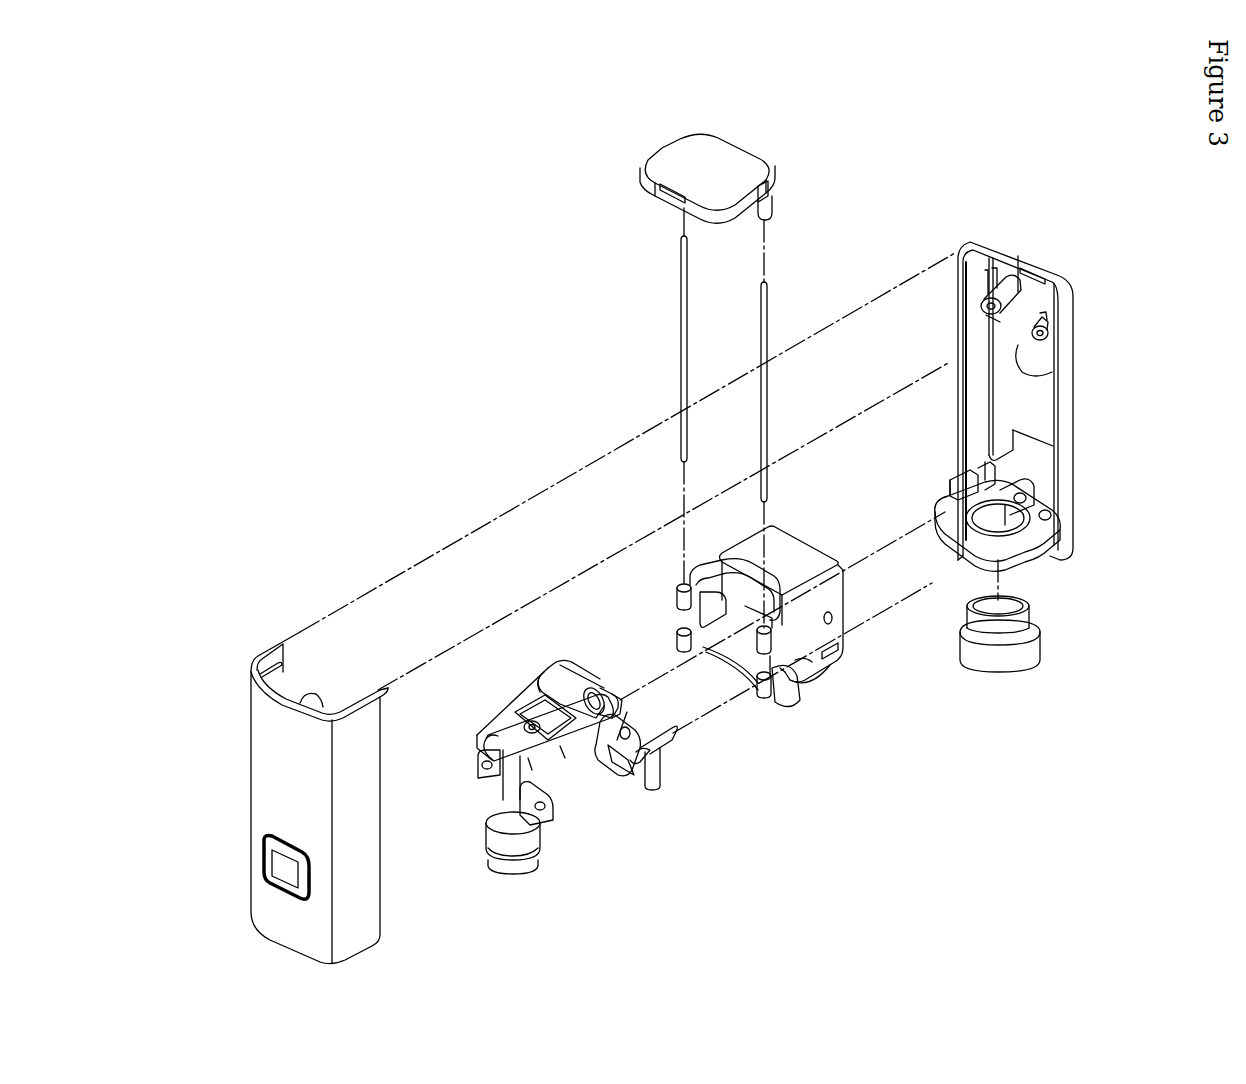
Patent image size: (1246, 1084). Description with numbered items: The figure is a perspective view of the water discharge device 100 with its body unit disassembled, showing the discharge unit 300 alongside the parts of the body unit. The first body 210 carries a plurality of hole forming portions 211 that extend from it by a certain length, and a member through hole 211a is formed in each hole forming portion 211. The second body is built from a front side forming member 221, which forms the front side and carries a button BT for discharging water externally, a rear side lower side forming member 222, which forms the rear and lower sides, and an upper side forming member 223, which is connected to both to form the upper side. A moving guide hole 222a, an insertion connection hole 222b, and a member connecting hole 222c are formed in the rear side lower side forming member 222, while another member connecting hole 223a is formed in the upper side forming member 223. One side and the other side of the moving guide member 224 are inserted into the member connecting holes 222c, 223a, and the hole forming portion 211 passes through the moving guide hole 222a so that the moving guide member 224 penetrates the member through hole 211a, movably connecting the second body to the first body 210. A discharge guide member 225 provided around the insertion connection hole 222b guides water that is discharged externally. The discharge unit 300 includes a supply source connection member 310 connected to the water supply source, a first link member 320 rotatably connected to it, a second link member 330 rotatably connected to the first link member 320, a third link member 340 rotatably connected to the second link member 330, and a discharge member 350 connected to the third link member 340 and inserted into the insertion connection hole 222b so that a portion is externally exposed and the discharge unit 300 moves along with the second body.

The water discharge device 100 is at (475, 180).
The front side forming member 221 is at (270, 745).
The button BT is at (283, 868).
The rear side lower side forming member 222 is at (1074, 441).
The moving guide hole 222a is at (1010, 320).
The insertion connection hole 222b is at (937, 518).
The member connecting hole 222c is at (957, 482).
The upper side forming member 223 is at (735, 163).
The member connecting hole 223a is at (778, 212).
The moving guide member 224 is at (758, 356).
The discharge guide member 225 is at (1020, 660).
The first body 210 is at (852, 669).
The hole forming portion 211 is at (763, 700).
The member through hole 211a is at (796, 688).
The discharge unit 300 is at (690, 840).
The supply source connection member 310 is at (672, 766).
The first link member 320 is at (570, 684).
The second link member 330 is at (563, 762).
The third link member 340 is at (490, 760).
The discharge member 350 is at (545, 851).